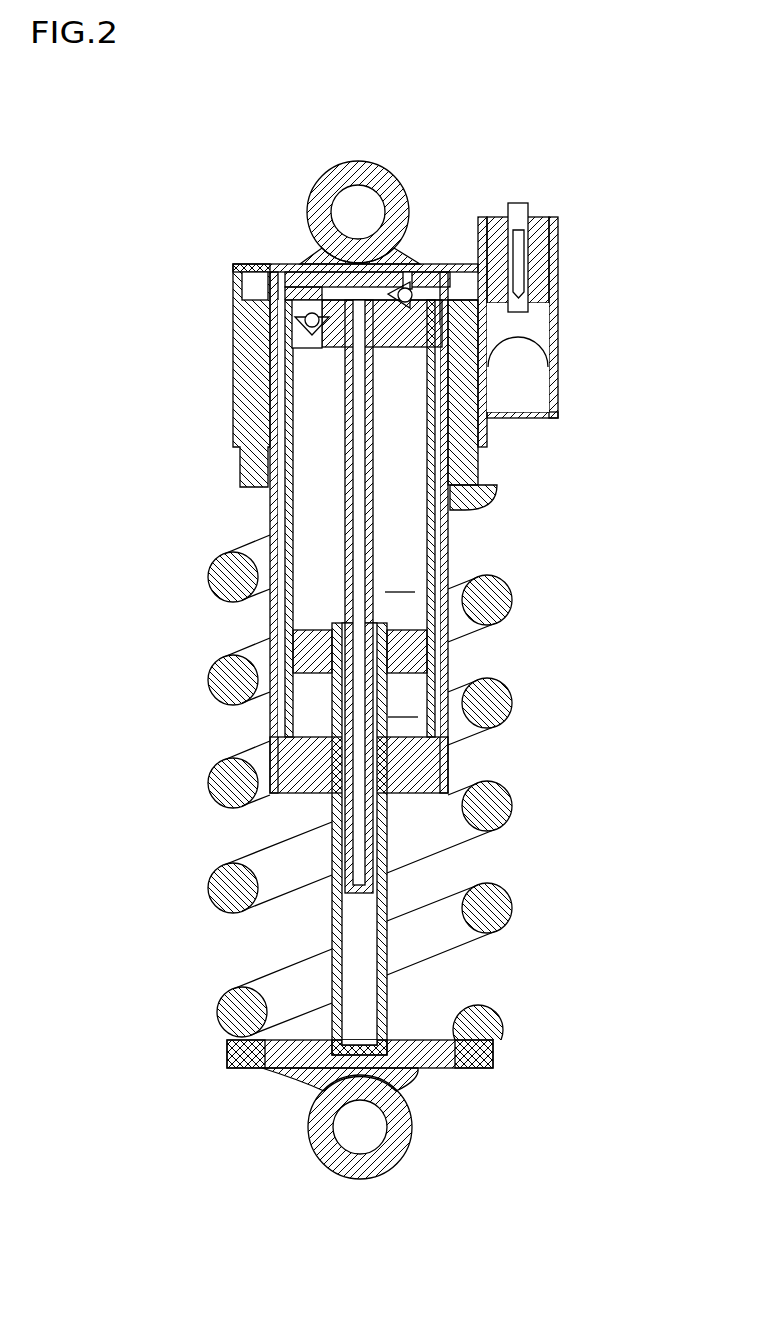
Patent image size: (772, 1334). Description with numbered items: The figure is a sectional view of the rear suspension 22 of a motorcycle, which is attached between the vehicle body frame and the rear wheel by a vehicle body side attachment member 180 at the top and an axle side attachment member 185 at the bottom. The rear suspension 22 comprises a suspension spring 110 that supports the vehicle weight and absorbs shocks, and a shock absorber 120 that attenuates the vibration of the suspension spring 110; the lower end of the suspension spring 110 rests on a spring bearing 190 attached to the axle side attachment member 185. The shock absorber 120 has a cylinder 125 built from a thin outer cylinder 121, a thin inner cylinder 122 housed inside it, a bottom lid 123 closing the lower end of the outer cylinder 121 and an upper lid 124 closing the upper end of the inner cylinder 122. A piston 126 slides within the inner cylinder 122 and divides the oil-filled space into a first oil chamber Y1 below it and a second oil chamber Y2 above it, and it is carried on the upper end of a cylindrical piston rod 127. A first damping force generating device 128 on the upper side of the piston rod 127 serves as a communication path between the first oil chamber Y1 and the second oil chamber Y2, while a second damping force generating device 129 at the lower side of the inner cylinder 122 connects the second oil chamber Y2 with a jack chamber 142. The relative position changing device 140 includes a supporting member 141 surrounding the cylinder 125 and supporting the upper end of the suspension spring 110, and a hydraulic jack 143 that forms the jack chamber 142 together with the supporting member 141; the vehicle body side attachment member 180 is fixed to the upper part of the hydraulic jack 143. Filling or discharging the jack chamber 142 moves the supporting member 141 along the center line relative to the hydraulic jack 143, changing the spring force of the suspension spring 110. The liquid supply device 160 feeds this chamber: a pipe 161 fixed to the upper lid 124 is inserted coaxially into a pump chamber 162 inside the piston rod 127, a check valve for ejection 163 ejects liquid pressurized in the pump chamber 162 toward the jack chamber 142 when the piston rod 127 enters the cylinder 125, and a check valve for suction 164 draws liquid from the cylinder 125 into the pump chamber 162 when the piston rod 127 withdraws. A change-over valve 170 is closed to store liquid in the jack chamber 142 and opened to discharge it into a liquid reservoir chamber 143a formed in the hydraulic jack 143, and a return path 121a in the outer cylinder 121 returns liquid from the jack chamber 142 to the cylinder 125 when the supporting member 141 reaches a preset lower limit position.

The rear suspension 22 is at (188, 211).
The suspension spring 110 is at (233, 998).
The shock absorber 120 is at (250, 619).
The outer cylinder 121 is at (272, 518).
The return path 121a is at (507, 368).
The inner cylinder 122 is at (437, 533).
The bottom lid 123 is at (448, 778).
The upper lid 124 is at (238, 297).
The cylinder 125 is at (458, 567).
The piston 126 is at (420, 652).
The piston rod 127 is at (330, 822).
The first damping force generating device 128 is at (313, 616).
The second damping force generating device 129 is at (400, 362).
The relative position changing device 140 is at (521, 177).
The supporting member 141 is at (480, 465).
The jack chamber 142 is at (463, 283).
The hydraulic jack 143 is at (487, 430).
The liquid reservoir chamber 143a is at (540, 323).
The liquid supply device 160 is at (402, 877).
The pipe 161 is at (347, 428).
The pump chamber 162 is at (365, 998).
The check valve for ejection 163 is at (405, 287).
The check valve for suction 164 is at (312, 312).
The change-over valve 170 is at (530, 213).
The vehicle body side attachment member 180 is at (352, 164).
The axle side attachment member 185 is at (310, 1116).
The spring bearing 190 is at (228, 1050).
The first oil chamber Y1 is at (360, 705).
The second oil chamber Y2 is at (360, 488).